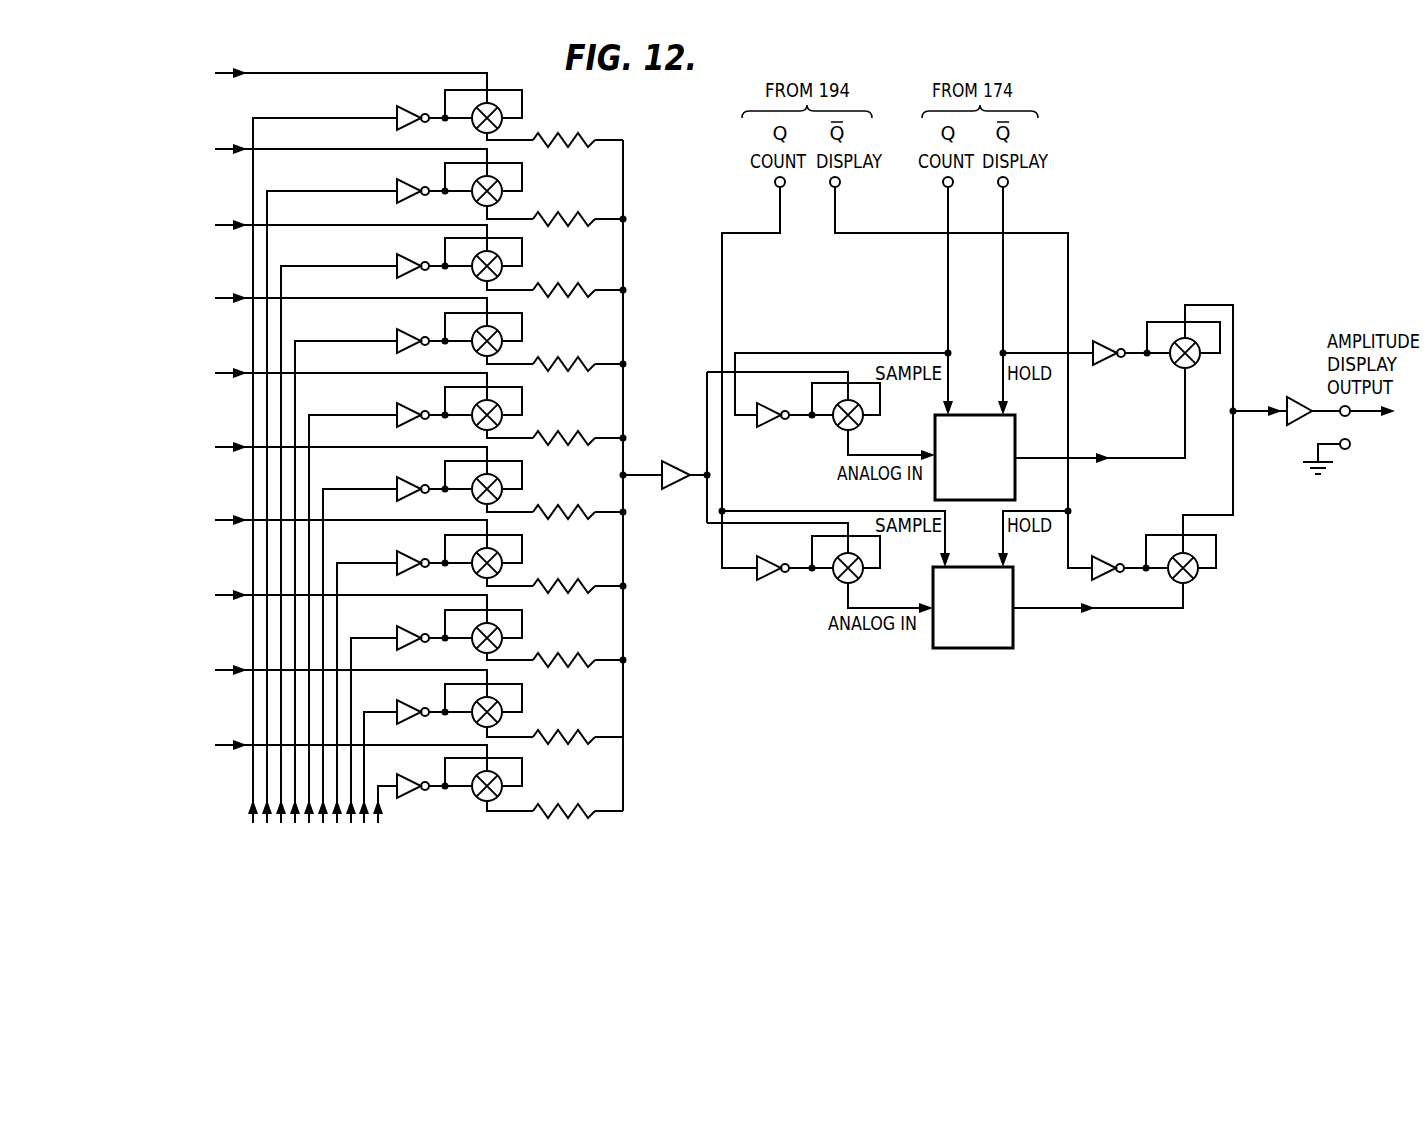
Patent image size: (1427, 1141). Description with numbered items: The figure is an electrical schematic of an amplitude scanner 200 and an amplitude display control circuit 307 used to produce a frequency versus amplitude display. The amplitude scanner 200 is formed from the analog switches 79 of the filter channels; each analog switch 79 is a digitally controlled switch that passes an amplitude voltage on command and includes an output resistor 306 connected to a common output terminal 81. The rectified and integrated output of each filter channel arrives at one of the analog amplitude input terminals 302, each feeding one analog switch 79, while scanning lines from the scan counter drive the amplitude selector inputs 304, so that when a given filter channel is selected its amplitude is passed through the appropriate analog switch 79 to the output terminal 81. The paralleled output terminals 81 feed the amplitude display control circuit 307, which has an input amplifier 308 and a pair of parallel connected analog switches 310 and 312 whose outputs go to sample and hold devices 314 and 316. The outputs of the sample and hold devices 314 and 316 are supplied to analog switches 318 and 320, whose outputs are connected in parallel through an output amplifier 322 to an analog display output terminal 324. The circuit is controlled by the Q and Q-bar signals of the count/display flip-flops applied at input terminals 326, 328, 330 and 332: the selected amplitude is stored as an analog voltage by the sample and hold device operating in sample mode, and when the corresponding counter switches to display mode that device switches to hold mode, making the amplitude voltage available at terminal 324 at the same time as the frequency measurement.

The amplitude scanner 200 is at (489, 868).
The analog amplitude input terminals 302 is at (225, 77).
The amplitude selector inputs 304 is at (228, 804).
The analog switch 79 is at (456, 145).
The output resistor 306 is at (556, 140).
The output terminal 81 is at (615, 140).
The input amplifier 308 is at (678, 490).
The analog switch 310 is at (805, 422).
The analog switch 312 is at (805, 575).
The sample and hold device 314 is at (935, 438).
The sample and hold device 316 is at (997, 648).
The amplitude display control circuit 307 is at (858, 679).
The analog switch 318 is at (1170, 365).
The analog switch 320 is at (1170, 583).
The output amplifier 322 is at (1285, 404).
The analog display output terminal 324 is at (1337, 416).
The input terminal 326 is at (775, 186).
The input terminal 328 is at (838, 190).
The input terminal 330 is at (943, 186).
The input terminal 332 is at (1008, 190).